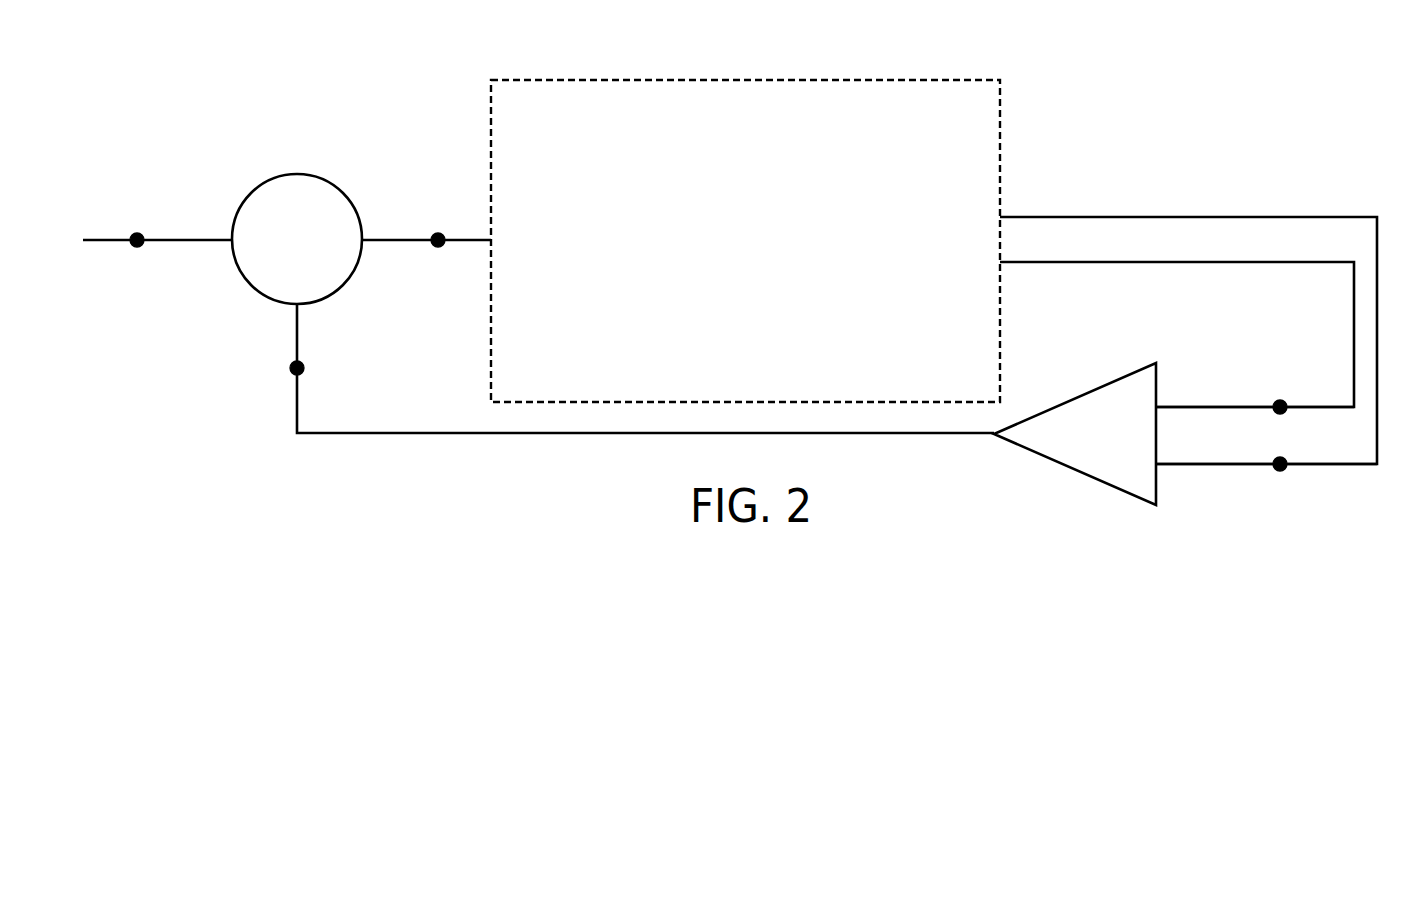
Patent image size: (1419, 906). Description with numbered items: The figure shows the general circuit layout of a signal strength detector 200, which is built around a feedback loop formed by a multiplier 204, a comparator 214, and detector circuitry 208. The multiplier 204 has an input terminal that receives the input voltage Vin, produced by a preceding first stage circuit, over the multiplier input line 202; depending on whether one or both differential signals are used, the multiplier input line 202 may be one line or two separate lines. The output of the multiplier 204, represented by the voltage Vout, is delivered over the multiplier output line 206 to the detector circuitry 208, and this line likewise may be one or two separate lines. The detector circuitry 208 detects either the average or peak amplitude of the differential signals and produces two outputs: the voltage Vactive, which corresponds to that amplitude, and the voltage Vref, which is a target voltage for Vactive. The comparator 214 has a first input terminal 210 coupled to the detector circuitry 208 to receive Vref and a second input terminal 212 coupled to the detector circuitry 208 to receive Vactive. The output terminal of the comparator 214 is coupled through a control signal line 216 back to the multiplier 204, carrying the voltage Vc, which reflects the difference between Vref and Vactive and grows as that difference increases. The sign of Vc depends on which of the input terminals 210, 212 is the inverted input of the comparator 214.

The signal strength detector 200 is at (1284, 109).
The multiplier input line 202 is at (188, 228).
The multiplier 204 is at (292, 174).
The multiplier output line 206 is at (374, 229).
The detector circuitry 208 is at (1013, 181).
The first input terminal 210 is at (1186, 391).
The second input terminal 212 is at (1166, 470).
The comparator 214 is at (1067, 397).
The control signal line 216 is at (330, 431).